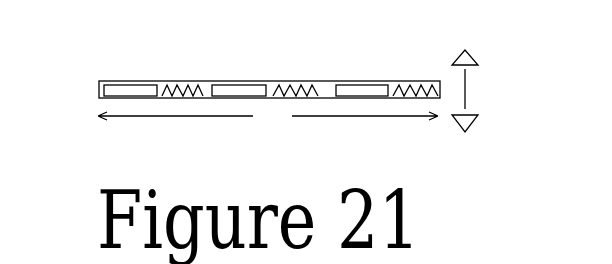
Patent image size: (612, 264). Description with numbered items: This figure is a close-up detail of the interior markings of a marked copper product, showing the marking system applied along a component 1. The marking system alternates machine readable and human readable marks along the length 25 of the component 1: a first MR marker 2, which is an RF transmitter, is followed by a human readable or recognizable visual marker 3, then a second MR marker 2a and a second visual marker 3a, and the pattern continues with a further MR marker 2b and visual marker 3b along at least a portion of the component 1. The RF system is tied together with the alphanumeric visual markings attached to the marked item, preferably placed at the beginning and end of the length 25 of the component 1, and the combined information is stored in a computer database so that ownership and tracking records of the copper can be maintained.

The component 1 is at (100, 92).
The MR marker 2 is at (122, 90).
The visual marker 3 is at (180, 93).
The second MR marker 2a is at (232, 88).
The second visual marker 3a is at (285, 88).
The MR marker 2b is at (357, 90).
The visual marker 3b is at (407, 92).
The length 25 is at (268, 116).